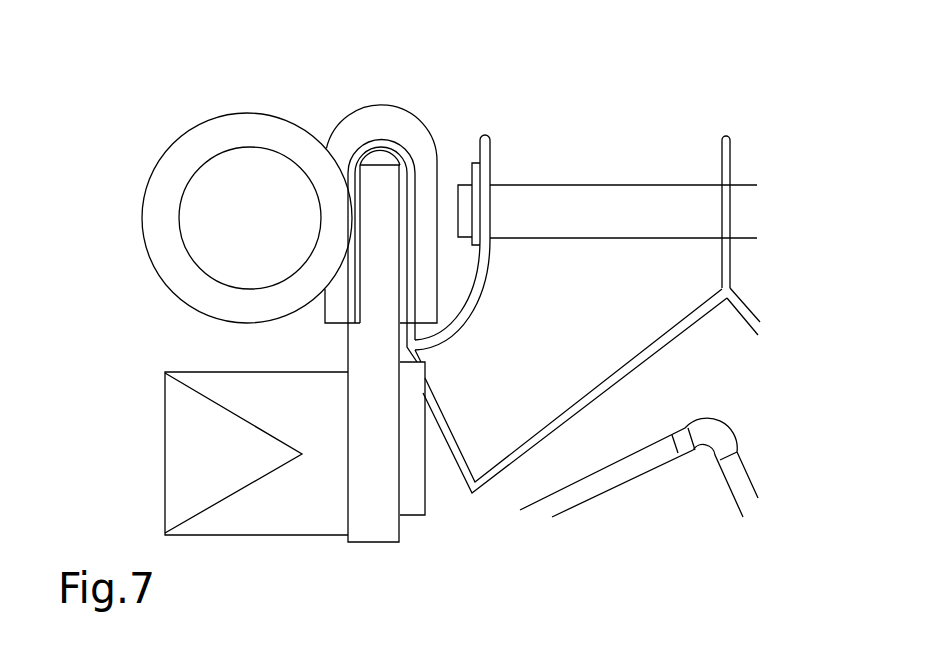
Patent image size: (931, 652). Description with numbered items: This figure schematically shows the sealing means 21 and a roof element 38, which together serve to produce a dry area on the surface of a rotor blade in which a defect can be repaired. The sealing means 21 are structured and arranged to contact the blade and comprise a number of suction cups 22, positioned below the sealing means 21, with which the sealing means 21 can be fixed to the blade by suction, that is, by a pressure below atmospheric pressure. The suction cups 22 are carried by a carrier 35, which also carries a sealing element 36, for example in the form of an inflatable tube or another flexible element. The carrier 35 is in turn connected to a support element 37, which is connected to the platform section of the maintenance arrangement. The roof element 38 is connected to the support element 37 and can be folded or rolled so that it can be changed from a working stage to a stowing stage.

The sealing means 21 is at (586, 118).
The suction cup 22 is at (282, 520).
The carrier 35 is at (375, 518).
The sealing element 36 is at (238, 128).
The support element 37 is at (740, 210).
The roof element 38 is at (642, 363).